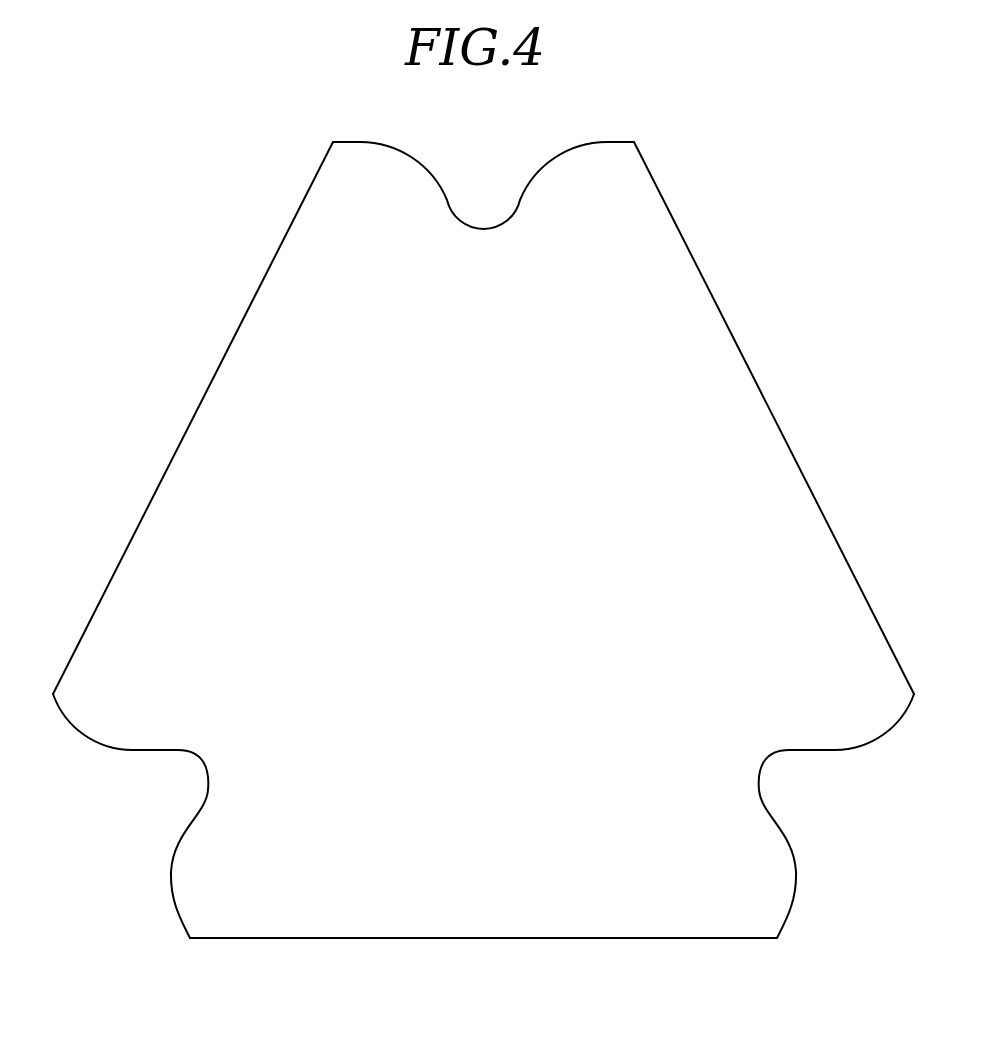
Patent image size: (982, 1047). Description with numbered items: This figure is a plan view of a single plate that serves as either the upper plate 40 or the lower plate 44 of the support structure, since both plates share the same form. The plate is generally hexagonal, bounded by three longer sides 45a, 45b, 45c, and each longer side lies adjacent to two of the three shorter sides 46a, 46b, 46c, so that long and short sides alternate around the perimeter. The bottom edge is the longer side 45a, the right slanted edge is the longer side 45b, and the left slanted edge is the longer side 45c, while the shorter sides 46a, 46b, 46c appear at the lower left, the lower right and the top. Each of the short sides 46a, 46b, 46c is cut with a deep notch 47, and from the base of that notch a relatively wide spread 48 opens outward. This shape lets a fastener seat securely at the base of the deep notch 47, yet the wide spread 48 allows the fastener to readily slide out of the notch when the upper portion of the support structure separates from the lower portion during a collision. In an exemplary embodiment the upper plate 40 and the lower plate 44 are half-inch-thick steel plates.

The upper plate 40 is at (473, 531).
The lower plate 44 is at (473, 531).
The longer side 45a is at (433, 938).
The longer side 45b is at (703, 278).
The longer side 45c is at (243, 318).
The shorter side 46a is at (148, 817).
The shorter side 46b is at (798, 795).
The shorter side 46c is at (582, 114).
The deep notch 47 is at (185, 754).
The wide spread 48 is at (92, 735).